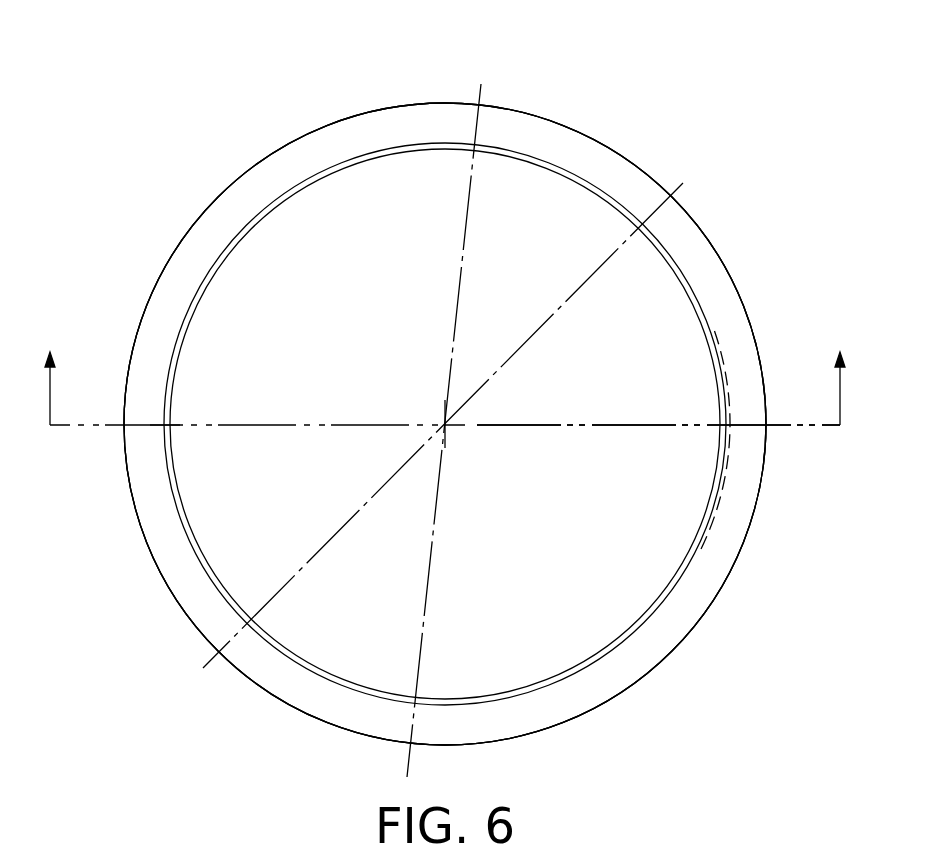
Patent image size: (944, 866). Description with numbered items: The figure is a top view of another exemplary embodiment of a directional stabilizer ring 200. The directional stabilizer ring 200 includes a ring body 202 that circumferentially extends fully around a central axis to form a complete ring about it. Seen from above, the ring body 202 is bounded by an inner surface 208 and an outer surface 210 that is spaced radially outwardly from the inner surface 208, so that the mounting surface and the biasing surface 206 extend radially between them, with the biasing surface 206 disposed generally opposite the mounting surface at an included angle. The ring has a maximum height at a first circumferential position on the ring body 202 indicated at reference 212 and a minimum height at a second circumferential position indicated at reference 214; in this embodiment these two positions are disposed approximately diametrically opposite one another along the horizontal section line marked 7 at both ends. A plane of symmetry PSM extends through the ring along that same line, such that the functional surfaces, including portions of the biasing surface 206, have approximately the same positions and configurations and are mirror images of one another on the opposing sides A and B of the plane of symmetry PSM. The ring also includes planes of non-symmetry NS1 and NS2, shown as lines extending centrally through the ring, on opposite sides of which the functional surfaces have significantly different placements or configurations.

The directional stabilizer ring 200 is at (722, 141).
The ring body 202 is at (565, 143).
The biasing surface 206 is at (210, 222).
The inner surface 208 is at (268, 208).
The outer surface 210 is at (338, 120).
The first circumferential position 212 is at (746, 434).
The second circumferential position 214 is at (142, 411).
The plane of non-symmetry NS1 is at (592, 272).
The plane of non-symmetry NS2 is at (463, 258).
The plane of symmetry PSM is at (643, 424).
The side of plane of symmetry A is at (708, 407).
The side of plane of symmetry B is at (708, 447).
The section line 7- 7 is at (445, 373).